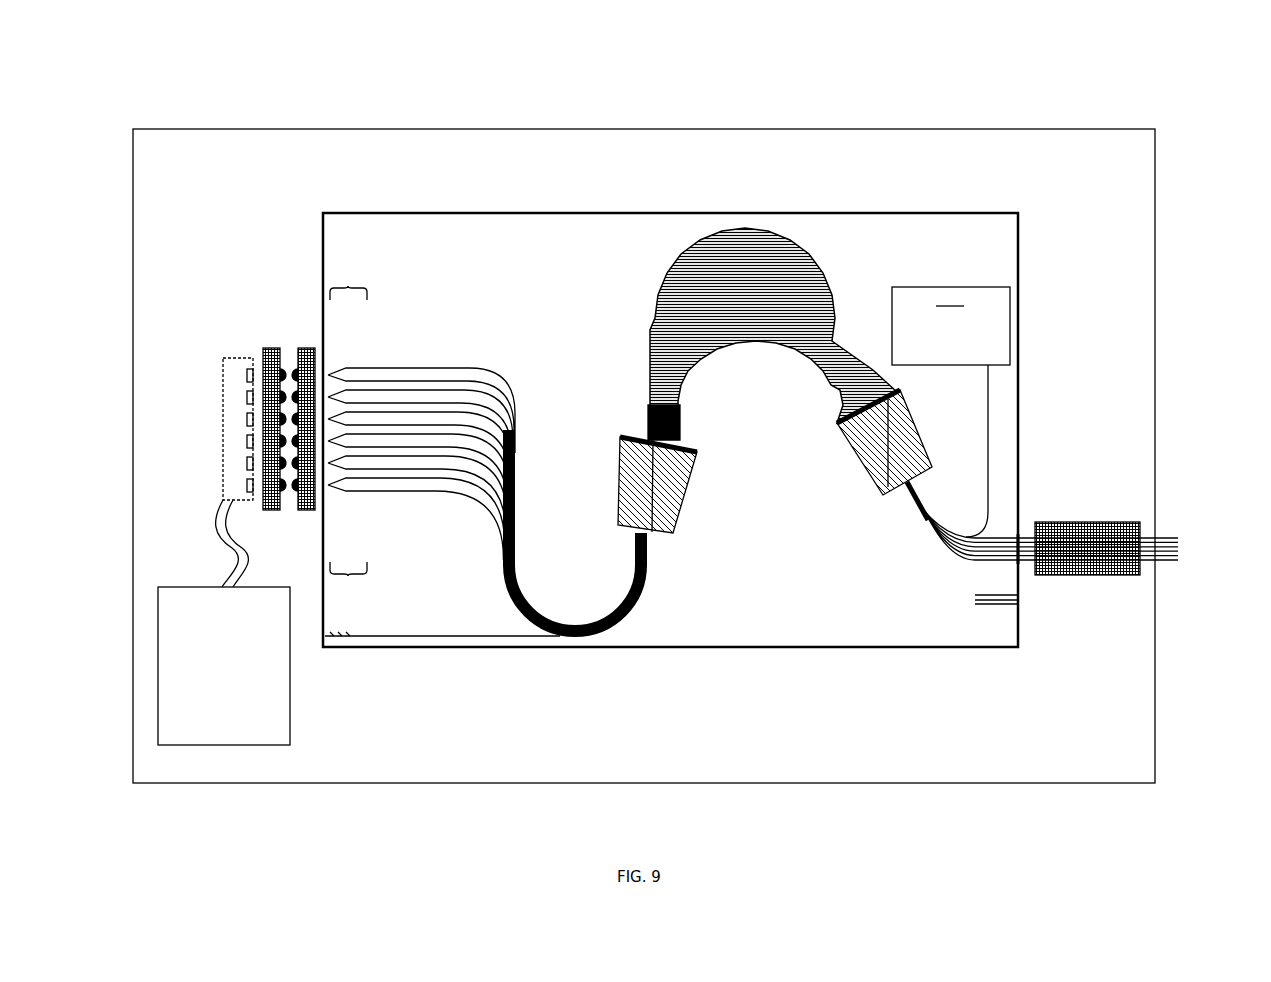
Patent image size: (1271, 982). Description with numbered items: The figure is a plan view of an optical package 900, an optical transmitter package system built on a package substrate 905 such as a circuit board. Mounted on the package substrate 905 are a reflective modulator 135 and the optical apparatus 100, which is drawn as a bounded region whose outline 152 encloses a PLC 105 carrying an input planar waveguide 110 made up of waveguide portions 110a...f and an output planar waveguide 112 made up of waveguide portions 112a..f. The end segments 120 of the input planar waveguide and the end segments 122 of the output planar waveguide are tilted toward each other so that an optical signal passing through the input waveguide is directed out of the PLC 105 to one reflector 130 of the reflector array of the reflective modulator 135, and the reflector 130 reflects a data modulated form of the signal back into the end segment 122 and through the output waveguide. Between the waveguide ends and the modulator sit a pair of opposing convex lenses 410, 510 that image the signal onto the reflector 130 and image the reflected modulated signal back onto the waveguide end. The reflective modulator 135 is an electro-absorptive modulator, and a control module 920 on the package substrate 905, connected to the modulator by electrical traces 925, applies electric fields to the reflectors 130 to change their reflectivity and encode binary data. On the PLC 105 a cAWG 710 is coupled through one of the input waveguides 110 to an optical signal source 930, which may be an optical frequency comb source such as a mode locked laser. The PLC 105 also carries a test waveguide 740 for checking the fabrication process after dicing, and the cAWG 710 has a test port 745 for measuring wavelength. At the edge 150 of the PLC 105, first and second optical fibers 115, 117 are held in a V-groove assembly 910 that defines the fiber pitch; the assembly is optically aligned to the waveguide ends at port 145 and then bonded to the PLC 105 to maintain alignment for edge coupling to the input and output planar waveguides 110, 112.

The optical package 900 is at (146, 90).
The package substrate 905 is at (1030, 173).
The optical apparatus 100 is at (747, 418).
The module housing wall 152 is at (323, 256).
The end segment of the input planar waveguide 120 is at (352, 286).
The end segment of the output planar waveguide 122 is at (355, 577).
The reflective modulator 135 is at (217, 351).
The reflector 130 is at (236, 406).
The convex lens 510 is at (255, 339).
The convex lens 410 is at (295, 339).
The electrical traces 925 is at (210, 511).
The control module 920 is at (232, 621).
The PLC 105 is at (886, 270).
The edge of the PLC 150 is at (1021, 286).
The cAWG 710 is at (637, 274).
The input planar waveguide 110 is at (931, 494).
The output planar waveguide 112 is at (904, 524).
The input planar waveguide portions 110a...f is at (500, 350).
The output planar waveguide portions 112a..f is at (517, 383).
The optical signal source 930 is at (951, 412).
The port 145 is at (1003, 532).
The V-groove assembly 910 is at (1094, 519).
The first optical fiber 115 is at (1171, 522).
The second optical fiber 117 is at (1181, 578).
The test port 745 is at (982, 605).
The test waveguide 740 is at (347, 644).